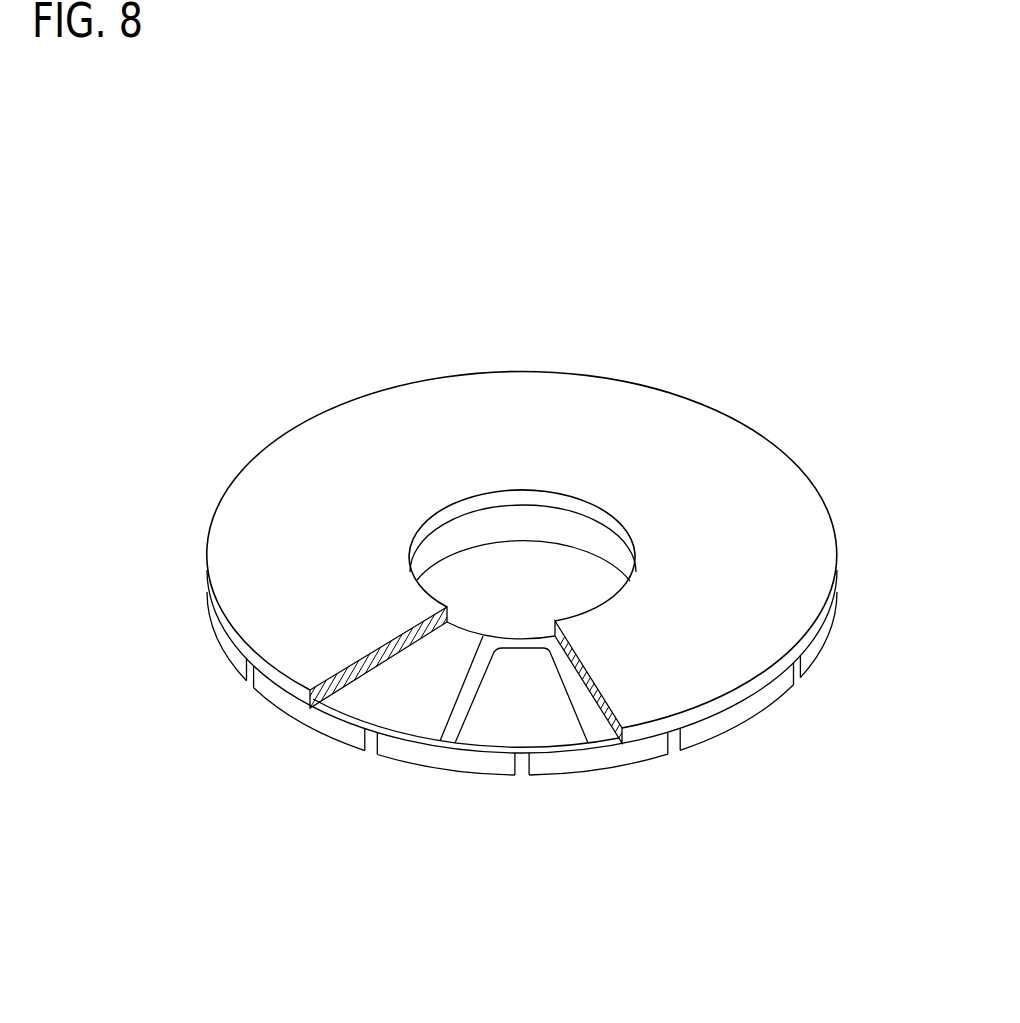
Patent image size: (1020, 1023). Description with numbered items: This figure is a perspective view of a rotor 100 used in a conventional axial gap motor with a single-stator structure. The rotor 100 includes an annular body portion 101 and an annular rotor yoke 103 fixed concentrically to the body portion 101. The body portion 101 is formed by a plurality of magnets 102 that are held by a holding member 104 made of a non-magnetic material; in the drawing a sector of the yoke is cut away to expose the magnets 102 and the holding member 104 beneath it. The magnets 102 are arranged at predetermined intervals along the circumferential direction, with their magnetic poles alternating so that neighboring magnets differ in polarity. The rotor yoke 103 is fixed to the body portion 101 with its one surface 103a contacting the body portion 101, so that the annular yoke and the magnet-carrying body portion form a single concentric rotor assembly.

The rotor 100 is at (702, 388).
The annular body portion 101 is at (478, 776).
The magnets 102 is at (483, 721).
The annular rotor yoke 103 is at (263, 500).
The one surface 103a is at (327, 728).
The holding member 104 is at (445, 738).